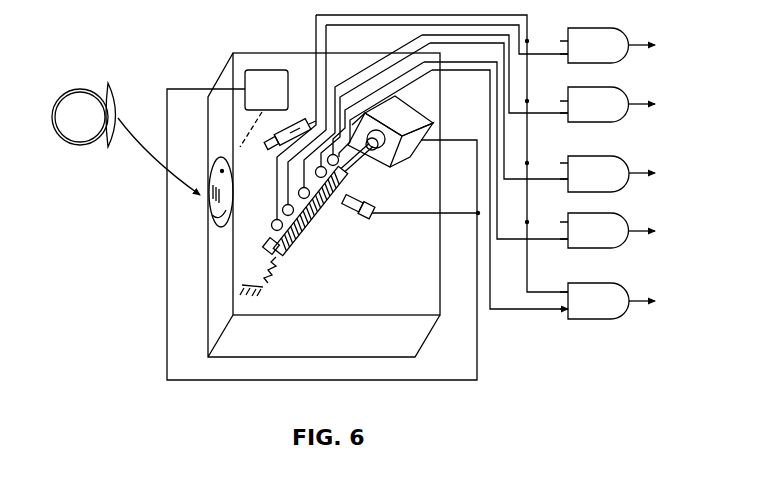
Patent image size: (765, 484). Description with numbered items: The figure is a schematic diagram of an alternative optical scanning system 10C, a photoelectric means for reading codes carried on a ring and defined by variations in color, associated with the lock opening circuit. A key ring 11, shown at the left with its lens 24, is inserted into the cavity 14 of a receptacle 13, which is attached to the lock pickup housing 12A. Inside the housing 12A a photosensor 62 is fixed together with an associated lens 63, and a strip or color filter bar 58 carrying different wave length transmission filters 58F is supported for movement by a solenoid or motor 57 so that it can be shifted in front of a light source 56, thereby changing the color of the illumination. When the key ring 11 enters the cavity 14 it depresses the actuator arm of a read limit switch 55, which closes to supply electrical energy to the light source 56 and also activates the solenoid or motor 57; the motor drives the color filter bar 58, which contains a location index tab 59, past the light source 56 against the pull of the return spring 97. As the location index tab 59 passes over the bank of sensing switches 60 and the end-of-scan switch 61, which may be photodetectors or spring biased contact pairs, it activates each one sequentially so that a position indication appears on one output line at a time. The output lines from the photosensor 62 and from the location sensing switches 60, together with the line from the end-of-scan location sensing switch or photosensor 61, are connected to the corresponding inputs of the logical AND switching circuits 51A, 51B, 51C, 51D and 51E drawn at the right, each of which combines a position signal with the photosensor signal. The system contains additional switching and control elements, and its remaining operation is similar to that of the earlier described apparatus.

The optical scanning system 10C is at (137, 390).
The key ring 11 is at (72, 145).
The lens 24 is at (113, 97).
The receptacle 13 is at (220, 160).
The cavity 14 is at (218, 214).
The housing 12A is at (422, 346).
The read limit switch 55 is at (258, 70).
The photosensor 62 is at (292, 125).
The lens 63 is at (267, 147).
The solenoid or motor 57 is at (411, 108).
The light source 56 is at (358, 202).
The color filter bar 58 is at (323, 199).
The wave length transmission filters 58F is at (319, 221).
The location index tab 59 is at (266, 246).
The sensing switches 60 is at (315, 172).
The end-of-scan location sensing switch 61 is at (327, 159).
The return spring 97 is at (270, 284).
The logical AND switching circuit 51A is at (609, 53).
The logical AND switching circuit 51B is at (609, 112).
The logical AND switching circuit 51C is at (609, 182).
The logical AND switching circuit 51D is at (609, 239).
The logical AND switching circuit 51E is at (609, 309).